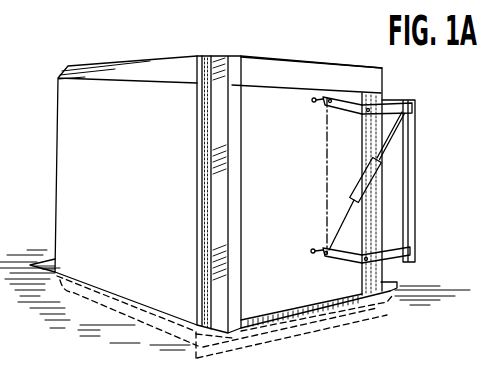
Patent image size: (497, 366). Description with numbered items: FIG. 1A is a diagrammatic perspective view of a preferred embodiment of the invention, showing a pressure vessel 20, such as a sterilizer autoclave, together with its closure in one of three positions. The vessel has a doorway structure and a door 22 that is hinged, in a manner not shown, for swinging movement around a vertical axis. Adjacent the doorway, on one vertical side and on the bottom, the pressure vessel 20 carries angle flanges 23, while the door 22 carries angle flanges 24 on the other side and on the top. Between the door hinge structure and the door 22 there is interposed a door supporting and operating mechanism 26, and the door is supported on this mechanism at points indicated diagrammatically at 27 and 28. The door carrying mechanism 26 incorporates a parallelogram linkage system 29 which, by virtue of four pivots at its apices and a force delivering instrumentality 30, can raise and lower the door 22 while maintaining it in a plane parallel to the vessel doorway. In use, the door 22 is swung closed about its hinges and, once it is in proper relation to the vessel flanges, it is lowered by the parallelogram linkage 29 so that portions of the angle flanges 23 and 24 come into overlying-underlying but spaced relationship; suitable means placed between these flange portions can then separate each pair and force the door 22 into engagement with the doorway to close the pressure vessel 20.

The pressure vessel 20 is at (140, 60).
The door 22 is at (303, 55).
The angle flanges 23 is at (217, 147).
The angle flanges 24 is at (358, 76).
The door supporting and operating mechanism 26 is at (420, 160).
The door support point 27 is at (312, 103).
The door support point 28 is at (311, 251).
The parallelogram linkage system 29 is at (320, 162).
The force delivering instrumentality 30 is at (344, 188).